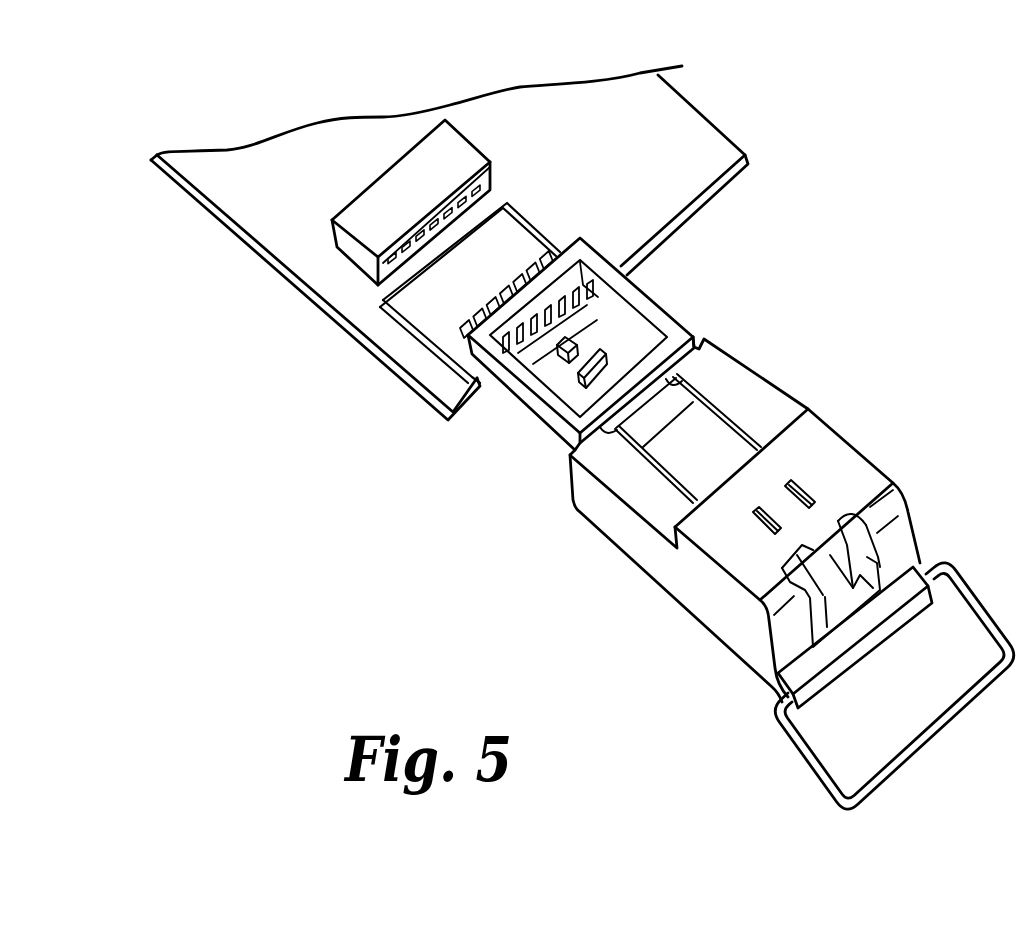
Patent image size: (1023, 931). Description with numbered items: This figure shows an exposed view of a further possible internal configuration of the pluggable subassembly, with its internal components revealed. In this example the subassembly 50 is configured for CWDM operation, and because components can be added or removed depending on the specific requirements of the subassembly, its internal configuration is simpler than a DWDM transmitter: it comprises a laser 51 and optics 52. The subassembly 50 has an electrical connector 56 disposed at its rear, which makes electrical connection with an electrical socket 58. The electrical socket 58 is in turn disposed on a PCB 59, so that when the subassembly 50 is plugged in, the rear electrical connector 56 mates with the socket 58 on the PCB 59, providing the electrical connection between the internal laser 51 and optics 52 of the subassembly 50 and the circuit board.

The subassembly 50 is at (700, 595).
The laser 51 is at (569, 338).
The optics 52 is at (576, 380).
The electrical connector 56 is at (553, 243).
The electrical socket 58 is at (430, 167).
The PCB 59 is at (313, 262).